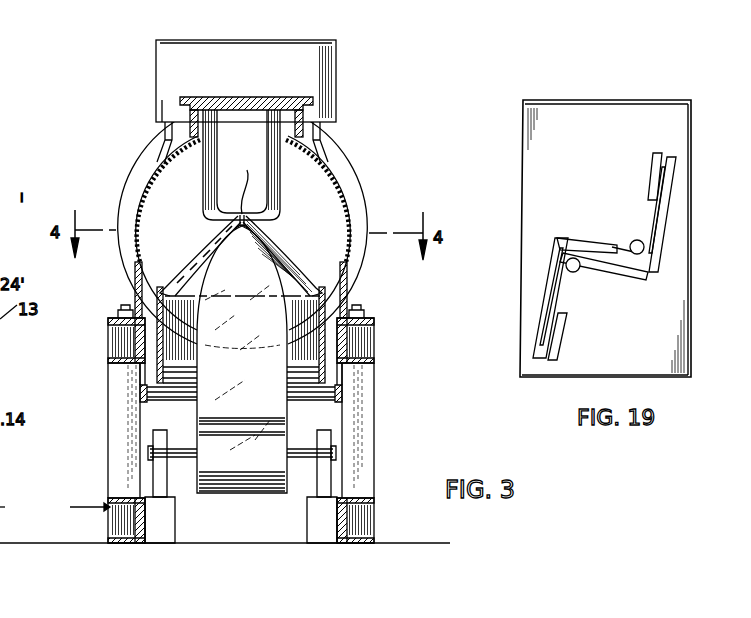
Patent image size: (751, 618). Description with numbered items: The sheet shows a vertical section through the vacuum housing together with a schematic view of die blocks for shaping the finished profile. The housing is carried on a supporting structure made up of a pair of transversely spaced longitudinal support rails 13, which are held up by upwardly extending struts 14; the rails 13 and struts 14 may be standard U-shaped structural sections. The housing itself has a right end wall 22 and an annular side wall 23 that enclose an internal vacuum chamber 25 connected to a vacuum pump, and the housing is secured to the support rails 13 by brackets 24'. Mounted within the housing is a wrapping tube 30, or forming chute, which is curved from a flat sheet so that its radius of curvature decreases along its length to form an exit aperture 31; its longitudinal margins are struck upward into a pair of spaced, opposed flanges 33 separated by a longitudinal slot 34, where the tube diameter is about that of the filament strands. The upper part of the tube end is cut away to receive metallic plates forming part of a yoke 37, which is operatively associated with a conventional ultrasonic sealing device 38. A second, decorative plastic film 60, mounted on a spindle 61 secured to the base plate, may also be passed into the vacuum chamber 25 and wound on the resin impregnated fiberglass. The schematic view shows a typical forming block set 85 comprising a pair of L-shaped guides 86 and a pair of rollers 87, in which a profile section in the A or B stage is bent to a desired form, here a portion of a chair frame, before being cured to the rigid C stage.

In FIG. 3, the longitudinal support rails 13 is at (366, 325).
In FIG. 3, the struts 14 is at (120, 421).
In FIG. 3, the right end wall 22 is at (333, 215).
In FIG. 3, the annular side wall 23 is at (348, 190).
In FIG. 3, the brackets 24' is at (269, 229).
In FIG. 3, the vacuum chamber 25 is at (303, 179).
In FIG. 3, the wrapping tube 30 is at (199, 251).
In FIG. 3, the exit aperture 31 is at (255, 250).
In FIG. 3, the flanges 33 is at (236, 185).
In FIG. 3, the longitudinal slot 34 is at (249, 209).
In FIG. 3, the yoke 37 is at (204, 193).
In FIG. 3, the ultrasonic sealing device 38 is at (338, 82).
In FIG. 3, the plastic film 60 is at (239, 493).
In FIG. 3, the spindle 61 is at (333, 455).
In FIG. 19, the forming block set 85 is at (540, 170).
In FIG. 19, the L-shaped guides 86 is at (673, 193).
In FIG. 19, the rollers 87 is at (644, 247).